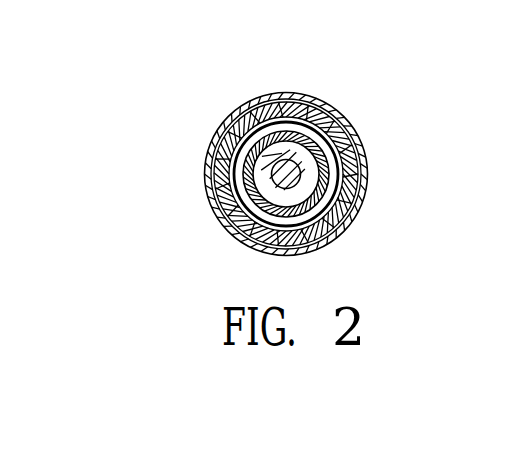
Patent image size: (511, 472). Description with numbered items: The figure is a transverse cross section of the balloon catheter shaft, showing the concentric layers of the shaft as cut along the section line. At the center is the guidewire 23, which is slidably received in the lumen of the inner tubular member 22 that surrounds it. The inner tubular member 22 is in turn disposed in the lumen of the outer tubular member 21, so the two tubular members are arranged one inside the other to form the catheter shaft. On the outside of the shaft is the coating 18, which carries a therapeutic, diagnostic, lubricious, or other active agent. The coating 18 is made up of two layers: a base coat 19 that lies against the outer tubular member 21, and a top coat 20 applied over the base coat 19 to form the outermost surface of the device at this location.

The coating 18 is at (247, 112).
The base coat 19 is at (292, 92).
The top coat 20 is at (328, 105).
The outer tubular member 21 is at (348, 218).
The inner tubular member 22 is at (328, 174).
The guidewire 23 is at (272, 178).